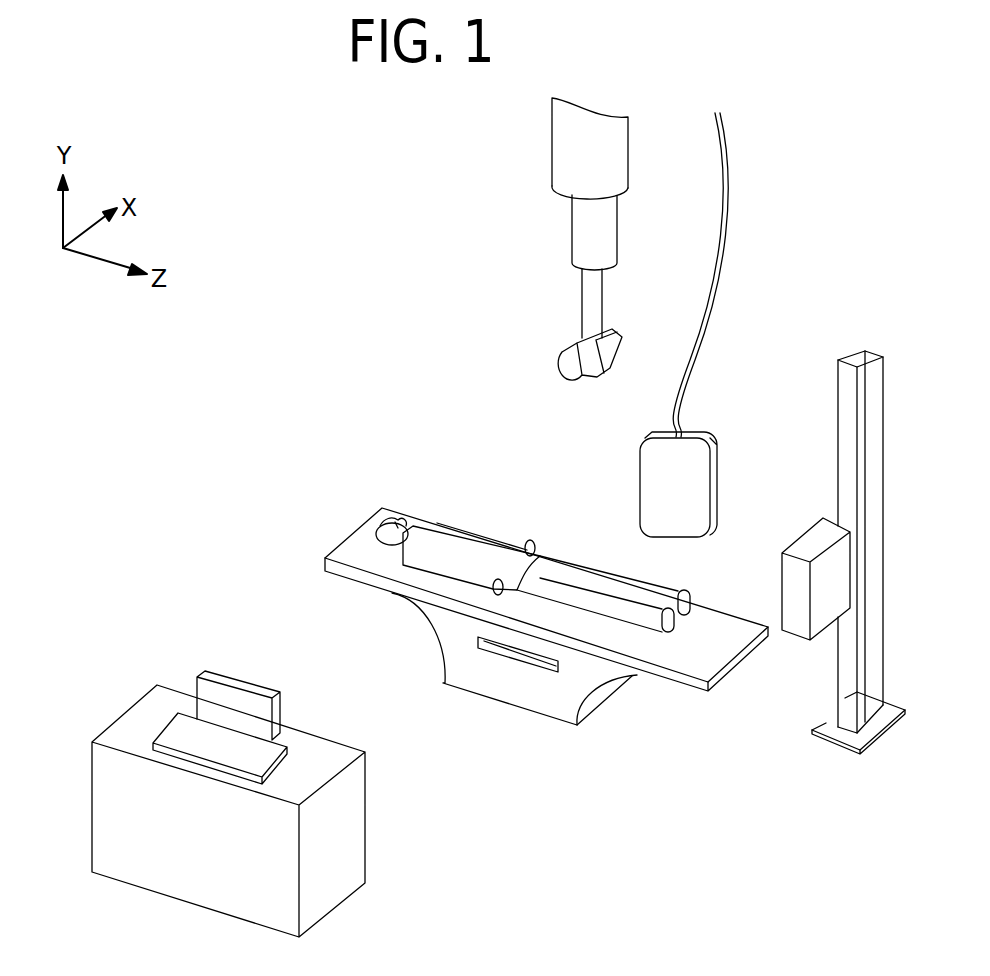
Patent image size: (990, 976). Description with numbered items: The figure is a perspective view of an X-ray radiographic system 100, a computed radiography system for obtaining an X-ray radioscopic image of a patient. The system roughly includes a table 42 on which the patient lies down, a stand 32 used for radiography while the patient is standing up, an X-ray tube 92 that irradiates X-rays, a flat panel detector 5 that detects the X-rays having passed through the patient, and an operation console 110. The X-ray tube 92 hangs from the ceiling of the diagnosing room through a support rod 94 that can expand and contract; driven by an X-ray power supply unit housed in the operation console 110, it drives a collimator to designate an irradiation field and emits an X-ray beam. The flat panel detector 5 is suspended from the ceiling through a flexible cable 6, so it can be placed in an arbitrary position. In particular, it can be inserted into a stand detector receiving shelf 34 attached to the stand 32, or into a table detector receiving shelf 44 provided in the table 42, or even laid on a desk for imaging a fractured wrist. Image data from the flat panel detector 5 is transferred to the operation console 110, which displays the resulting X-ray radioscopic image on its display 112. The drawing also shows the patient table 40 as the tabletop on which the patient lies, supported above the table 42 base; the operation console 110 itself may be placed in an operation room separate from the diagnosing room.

The X-ray radiographic system 100 is at (698, 836).
The operation console 110 is at (342, 900).
The display 112 is at (227, 673).
The stand 32 is at (884, 466).
The stand detector receiving shelf 34 is at (827, 578).
The patient table 40 is at (546, 599).
The table 42 is at (590, 712).
The table detector receiving shelf 44 is at (507, 657).
The flat panel detector 5 is at (698, 432).
The flexible cable 6 is at (725, 249).
The X-ray tube 92 is at (573, 347).
The support rod 94 is at (572, 233).